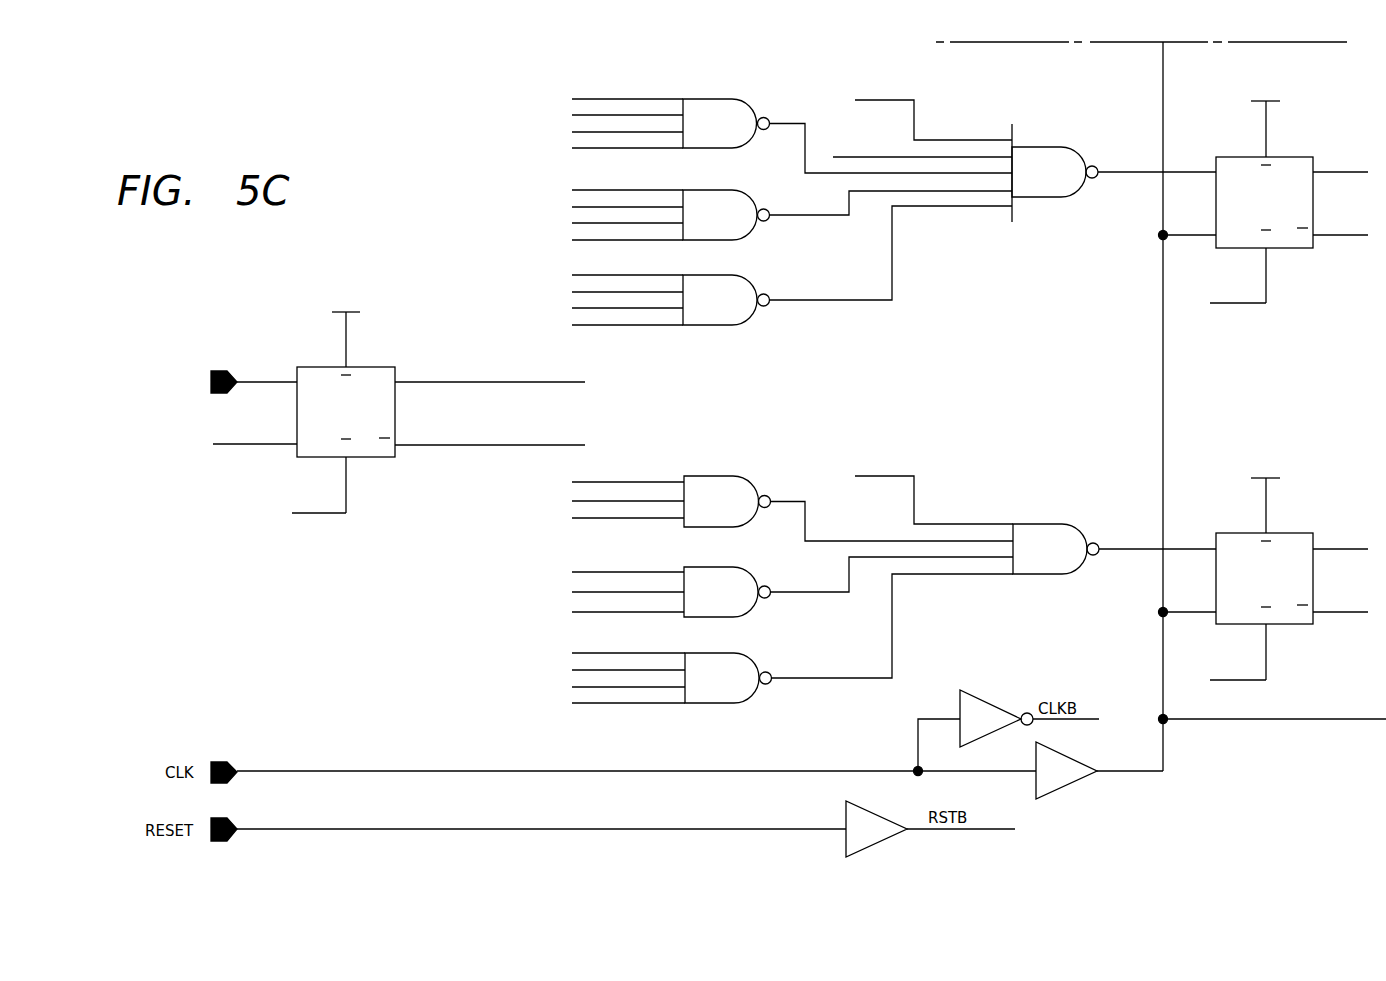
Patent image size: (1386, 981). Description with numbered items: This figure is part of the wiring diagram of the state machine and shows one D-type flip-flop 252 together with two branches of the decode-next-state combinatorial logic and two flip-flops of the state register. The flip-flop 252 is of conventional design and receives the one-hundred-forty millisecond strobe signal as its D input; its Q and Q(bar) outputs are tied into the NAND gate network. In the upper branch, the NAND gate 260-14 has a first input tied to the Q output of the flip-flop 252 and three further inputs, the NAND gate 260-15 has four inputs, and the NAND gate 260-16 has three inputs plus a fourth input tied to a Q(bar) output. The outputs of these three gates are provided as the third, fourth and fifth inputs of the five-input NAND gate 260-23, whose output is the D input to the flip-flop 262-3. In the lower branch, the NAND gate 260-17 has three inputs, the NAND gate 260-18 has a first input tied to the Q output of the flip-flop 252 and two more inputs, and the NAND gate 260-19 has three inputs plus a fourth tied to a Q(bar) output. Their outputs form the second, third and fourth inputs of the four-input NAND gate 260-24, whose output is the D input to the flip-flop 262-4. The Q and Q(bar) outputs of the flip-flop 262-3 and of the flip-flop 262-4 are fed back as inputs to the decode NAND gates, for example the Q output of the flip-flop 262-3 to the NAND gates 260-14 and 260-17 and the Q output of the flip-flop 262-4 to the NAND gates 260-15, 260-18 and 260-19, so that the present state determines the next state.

The flip-flop 252 is at (318, 366).
The NAND gate 260-14 is at (718, 99).
The NAND gate 260-15 is at (740, 241).
The NAND gate 260-16 is at (730, 326).
The NAND gate 260-17 is at (705, 475).
The NAND gate 260-18 is at (738, 617).
The NAND gate 260-19 is at (722, 705).
The five input NAND gate 260-23 is at (1047, 147).
The four input NAND gate 260-24 is at (1028, 524).
The flip-flop 262-3 is at (1277, 157).
The flip-flop 262-4 is at (1277, 533).